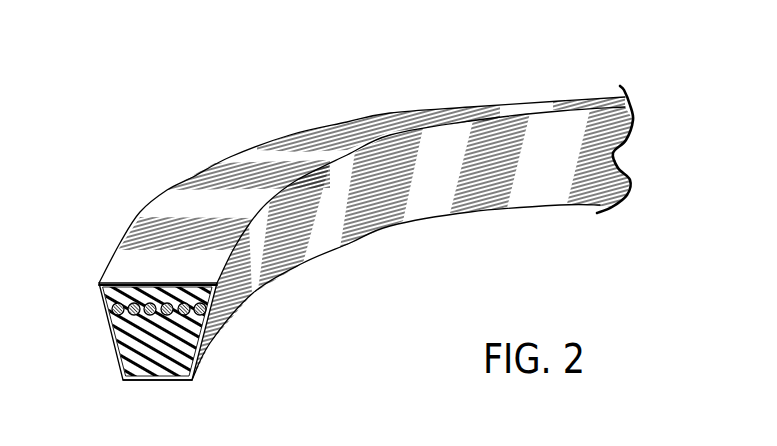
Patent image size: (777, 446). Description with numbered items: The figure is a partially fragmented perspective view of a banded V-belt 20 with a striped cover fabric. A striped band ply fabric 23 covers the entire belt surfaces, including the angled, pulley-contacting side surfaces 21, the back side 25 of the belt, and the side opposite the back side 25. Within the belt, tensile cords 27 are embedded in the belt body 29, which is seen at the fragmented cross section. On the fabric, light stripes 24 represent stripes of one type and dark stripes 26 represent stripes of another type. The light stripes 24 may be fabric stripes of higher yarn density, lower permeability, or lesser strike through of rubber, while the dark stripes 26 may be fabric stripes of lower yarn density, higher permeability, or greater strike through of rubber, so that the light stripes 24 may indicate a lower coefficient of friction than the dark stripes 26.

The banded V-belt 20 is at (582, 74).
The side surfaces 21 is at (252, 292).
The striped band ply fabric 23 is at (180, 381).
The light stripes 24 is at (423, 202).
The back side 25 is at (205, 208).
The dark stripes 26 is at (487, 197).
The tensile cords 27 is at (125, 300).
The belt body 29 is at (132, 350).